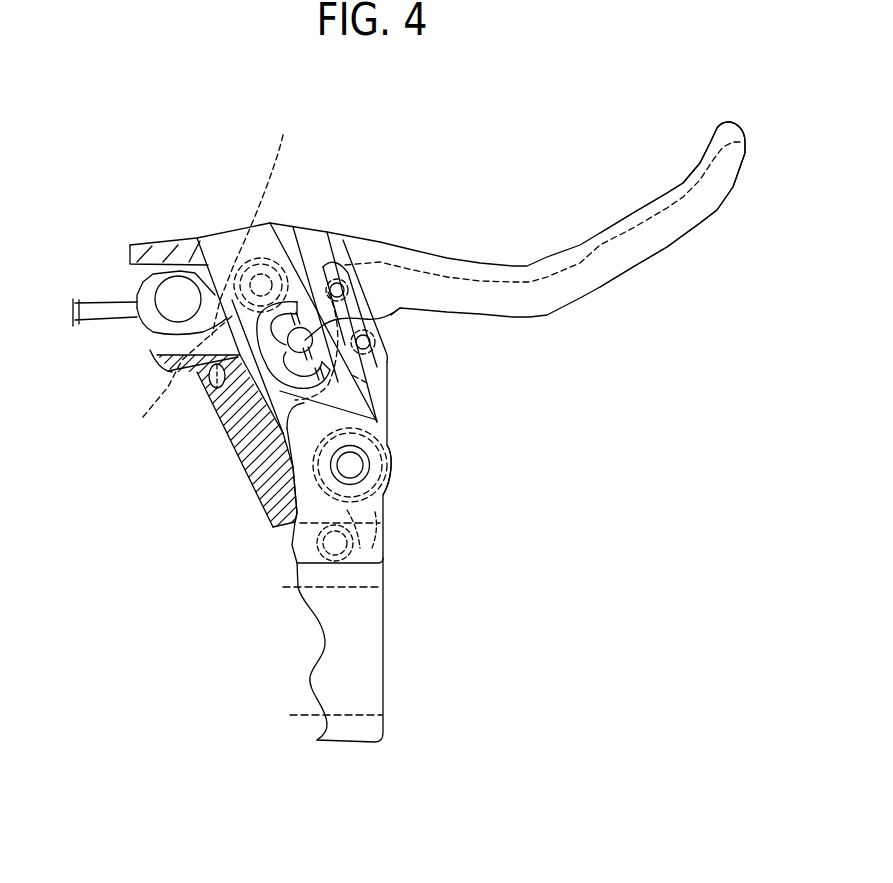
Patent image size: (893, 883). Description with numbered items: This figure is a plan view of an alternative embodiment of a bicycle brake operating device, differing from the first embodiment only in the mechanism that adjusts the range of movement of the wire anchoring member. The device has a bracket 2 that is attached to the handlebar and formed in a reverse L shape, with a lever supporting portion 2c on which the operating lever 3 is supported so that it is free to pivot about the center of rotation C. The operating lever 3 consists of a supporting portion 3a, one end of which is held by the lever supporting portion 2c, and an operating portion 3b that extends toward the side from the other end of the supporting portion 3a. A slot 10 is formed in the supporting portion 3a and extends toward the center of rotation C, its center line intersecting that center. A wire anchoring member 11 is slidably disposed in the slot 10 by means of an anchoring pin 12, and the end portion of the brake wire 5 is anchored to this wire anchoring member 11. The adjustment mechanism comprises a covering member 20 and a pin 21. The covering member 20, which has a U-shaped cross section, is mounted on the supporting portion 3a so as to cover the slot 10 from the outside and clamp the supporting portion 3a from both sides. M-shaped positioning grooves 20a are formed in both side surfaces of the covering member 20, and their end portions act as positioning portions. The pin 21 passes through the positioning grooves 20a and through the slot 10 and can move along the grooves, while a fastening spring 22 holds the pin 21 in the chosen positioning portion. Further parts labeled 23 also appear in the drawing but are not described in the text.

The bracket 2 is at (214, 438).
The lever supporting portion 2c is at (393, 452).
The operating lever 3 is at (682, 183).
The supporting portion 3a is at (254, 220).
The operating portion 3b is at (600, 233).
The brake wire 5 is at (106, 302).
The slot 10 is at (168, 335).
The wire anchoring member 11 is at (170, 277).
The anchoring pin 12 is at (253, 330).
The covering member 20 is at (268, 228).
The positioning grooves 20a is at (243, 432).
The pin 21 is at (391, 315).
The fastening spring 22 is at (367, 383).
The screws 23 is at (340, 283).
The center of rotation C is at (352, 468).